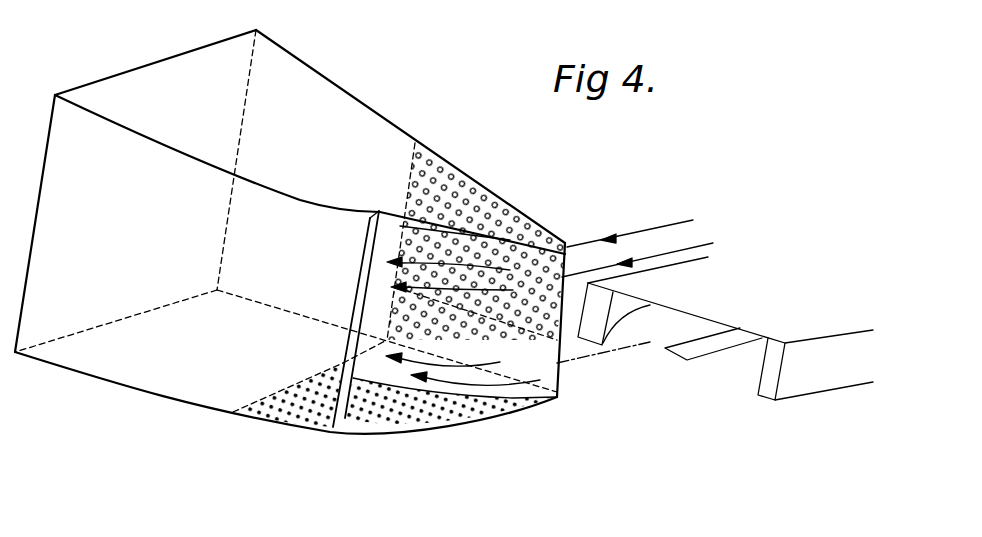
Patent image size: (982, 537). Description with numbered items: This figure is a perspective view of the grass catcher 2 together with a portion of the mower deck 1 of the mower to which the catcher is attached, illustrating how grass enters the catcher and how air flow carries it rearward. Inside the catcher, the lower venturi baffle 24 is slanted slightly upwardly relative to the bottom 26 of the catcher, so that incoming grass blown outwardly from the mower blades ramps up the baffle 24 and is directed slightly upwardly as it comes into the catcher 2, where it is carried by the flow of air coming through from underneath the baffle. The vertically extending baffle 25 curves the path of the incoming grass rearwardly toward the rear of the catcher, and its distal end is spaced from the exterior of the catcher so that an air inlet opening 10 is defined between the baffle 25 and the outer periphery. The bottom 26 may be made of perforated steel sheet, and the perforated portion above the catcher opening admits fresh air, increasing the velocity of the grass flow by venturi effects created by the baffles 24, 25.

The mower deck 1 is at (787, 325).
The grass catcher 2 is at (330, 102).
The air inlet opening 10 is at (352, 322).
The lower venturi baffle 24 is at (392, 373).
The vertically extending baffle 25 is at (382, 282).
The bottom of the catcher 26 is at (372, 433).